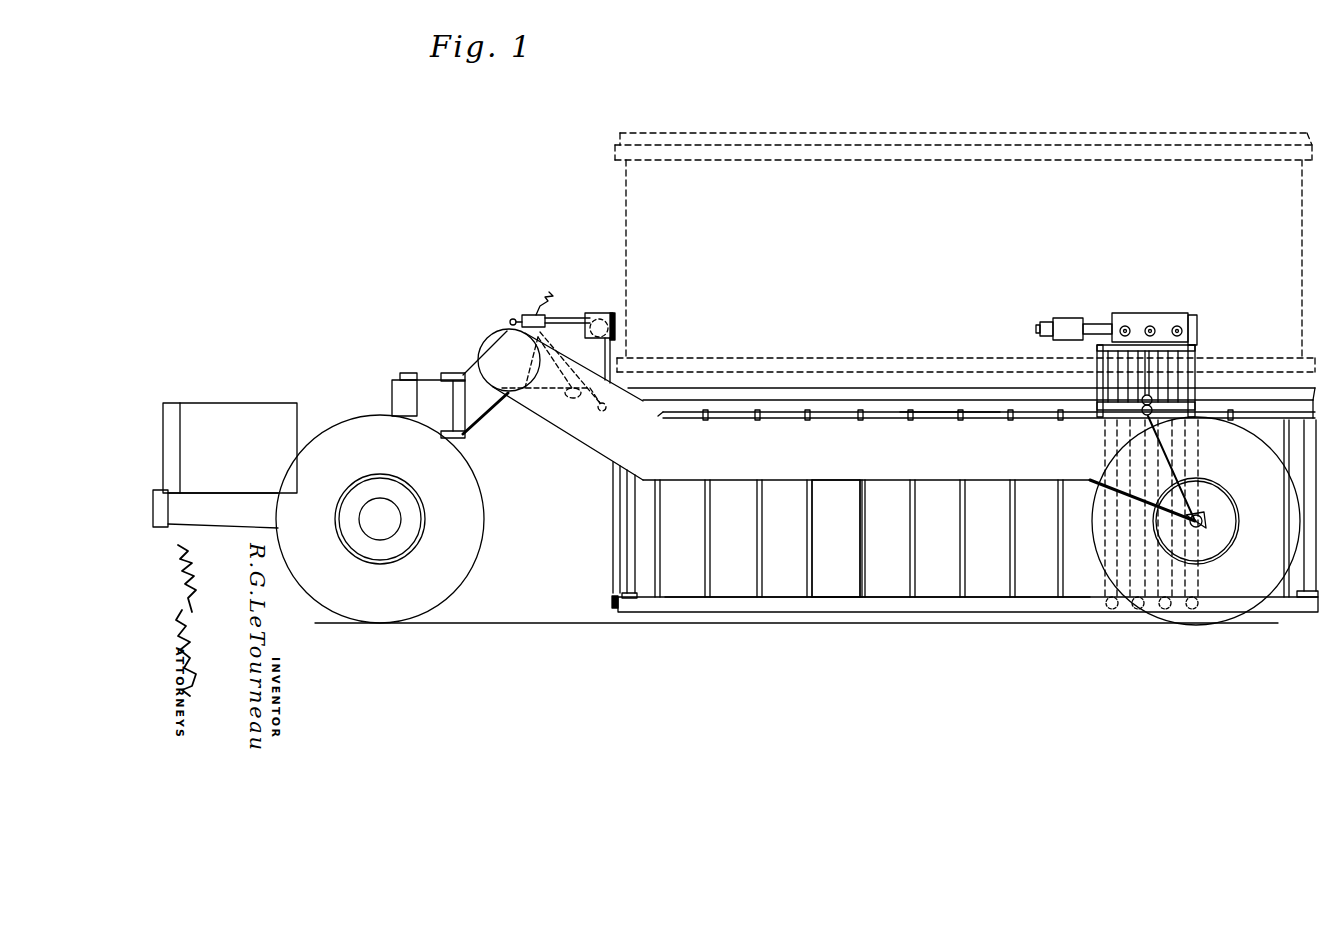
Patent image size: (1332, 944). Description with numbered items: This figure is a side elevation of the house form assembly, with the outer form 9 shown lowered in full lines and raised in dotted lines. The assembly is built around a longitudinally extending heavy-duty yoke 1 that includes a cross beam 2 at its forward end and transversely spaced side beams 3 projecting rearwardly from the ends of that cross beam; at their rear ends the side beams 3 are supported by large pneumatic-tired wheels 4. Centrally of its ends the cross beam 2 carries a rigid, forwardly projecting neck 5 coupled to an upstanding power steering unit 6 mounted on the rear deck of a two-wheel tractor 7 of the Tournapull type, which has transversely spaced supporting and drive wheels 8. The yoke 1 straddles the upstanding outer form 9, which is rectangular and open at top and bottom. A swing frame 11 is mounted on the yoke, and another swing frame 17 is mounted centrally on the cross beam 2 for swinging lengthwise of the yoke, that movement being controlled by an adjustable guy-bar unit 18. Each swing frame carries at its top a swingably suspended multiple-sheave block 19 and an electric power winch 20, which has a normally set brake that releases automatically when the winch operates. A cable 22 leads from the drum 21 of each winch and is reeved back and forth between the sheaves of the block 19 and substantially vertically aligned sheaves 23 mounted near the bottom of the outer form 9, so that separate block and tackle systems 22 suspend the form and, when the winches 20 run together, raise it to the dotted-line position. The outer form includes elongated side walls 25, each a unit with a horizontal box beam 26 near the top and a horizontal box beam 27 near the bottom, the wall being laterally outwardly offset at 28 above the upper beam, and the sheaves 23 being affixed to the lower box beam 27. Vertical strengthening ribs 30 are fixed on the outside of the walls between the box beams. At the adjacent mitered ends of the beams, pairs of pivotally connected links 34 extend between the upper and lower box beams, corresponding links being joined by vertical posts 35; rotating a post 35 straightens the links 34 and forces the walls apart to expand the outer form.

The yoke 1 is at (572, 440).
The cross beam 2 is at (500, 377).
The side beams 3 is at (843, 455).
The pneumatic-tired wheels 4 is at (1092, 533).
The neck 5 is at (474, 362).
The power steering unit 6 is at (405, 393).
The two-wheel tractor 7 is at (255, 410).
The supporting and drive wheels 8 is at (345, 437).
The outer form 9 is at (712, 614).
The swing frame 11 is at (1097, 370).
The swing frame 17 is at (608, 356).
The adjustable guy-bar unit 18 is at (553, 316).
The multiple-sheave block 19 is at (614, 323).
The electric power winch 20 is at (1068, 318).
The drum 21 is at (1098, 323).
The cable / block and tackle system 22 is at (1155, 366).
The sheaves 23 is at (1136, 609).
The side walls 25 is at (838, 582).
The upper box beam 26 is at (782, 416).
The lower box beam 27 is at (728, 600).
The laterally outwardly offset portion 28 is at (948, 400).
The vertical strengthening ribs 30 is at (900, 536).
The links 34 is at (620, 592).
The vertical posts 35 is at (632, 534).